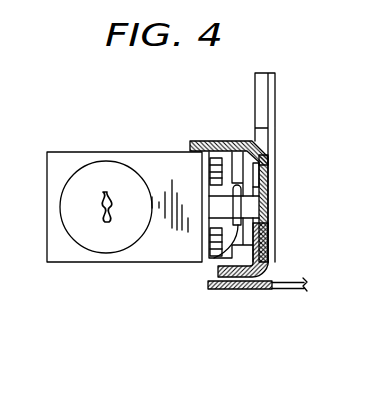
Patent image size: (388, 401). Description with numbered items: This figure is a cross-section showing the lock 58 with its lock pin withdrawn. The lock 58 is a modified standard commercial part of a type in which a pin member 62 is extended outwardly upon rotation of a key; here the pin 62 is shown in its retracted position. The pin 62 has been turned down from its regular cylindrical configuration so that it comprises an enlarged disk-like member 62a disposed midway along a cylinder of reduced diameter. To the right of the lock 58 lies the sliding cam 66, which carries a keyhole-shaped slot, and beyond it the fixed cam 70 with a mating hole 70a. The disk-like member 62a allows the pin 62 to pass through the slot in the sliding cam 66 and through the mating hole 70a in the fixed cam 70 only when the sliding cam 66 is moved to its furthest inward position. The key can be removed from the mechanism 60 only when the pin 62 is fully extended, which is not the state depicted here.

The lock 58 is at (141, 151).
The mechanism 60 is at (128, 251).
The pin member 62 is at (250, 204).
The disk-like member 62a is at (209, 259).
The sliding cam 66 is at (273, 245).
The fixed cam 70 is at (258, 68).
The mating hole 70a is at (276, 216).